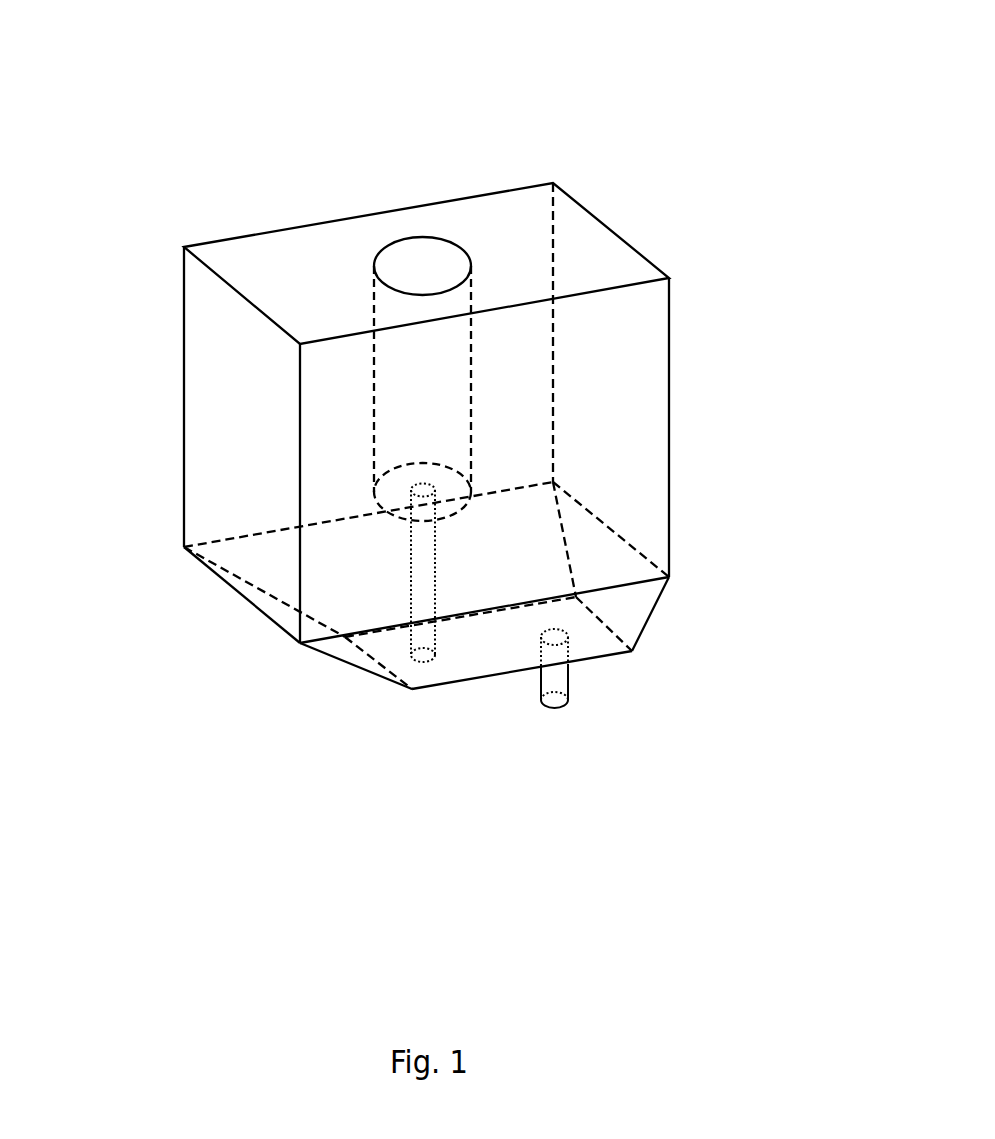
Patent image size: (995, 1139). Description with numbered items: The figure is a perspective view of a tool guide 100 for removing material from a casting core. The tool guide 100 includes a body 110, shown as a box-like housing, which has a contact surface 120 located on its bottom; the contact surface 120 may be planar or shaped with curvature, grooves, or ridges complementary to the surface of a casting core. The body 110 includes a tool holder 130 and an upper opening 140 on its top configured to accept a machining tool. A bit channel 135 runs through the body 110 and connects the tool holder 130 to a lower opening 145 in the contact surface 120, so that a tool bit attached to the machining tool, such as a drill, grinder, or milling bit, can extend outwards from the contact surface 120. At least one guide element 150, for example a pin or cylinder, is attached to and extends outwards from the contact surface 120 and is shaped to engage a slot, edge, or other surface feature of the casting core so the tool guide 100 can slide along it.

The tool guide 100 is at (678, 71).
The body 110 is at (670, 428).
The contact surface 120 is at (486, 655).
The tool holder 130 is at (373, 430).
The bit channel 135 is at (410, 553).
The upper opening 140 is at (427, 255).
The lower opening 145 is at (422, 677).
The guide element 150 is at (568, 675).